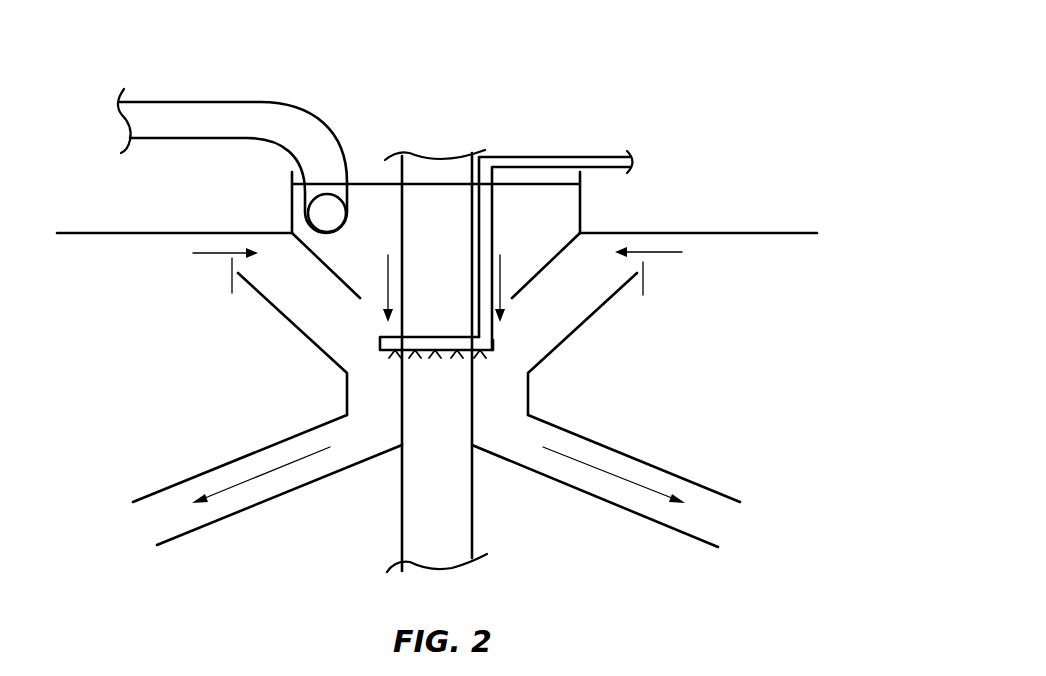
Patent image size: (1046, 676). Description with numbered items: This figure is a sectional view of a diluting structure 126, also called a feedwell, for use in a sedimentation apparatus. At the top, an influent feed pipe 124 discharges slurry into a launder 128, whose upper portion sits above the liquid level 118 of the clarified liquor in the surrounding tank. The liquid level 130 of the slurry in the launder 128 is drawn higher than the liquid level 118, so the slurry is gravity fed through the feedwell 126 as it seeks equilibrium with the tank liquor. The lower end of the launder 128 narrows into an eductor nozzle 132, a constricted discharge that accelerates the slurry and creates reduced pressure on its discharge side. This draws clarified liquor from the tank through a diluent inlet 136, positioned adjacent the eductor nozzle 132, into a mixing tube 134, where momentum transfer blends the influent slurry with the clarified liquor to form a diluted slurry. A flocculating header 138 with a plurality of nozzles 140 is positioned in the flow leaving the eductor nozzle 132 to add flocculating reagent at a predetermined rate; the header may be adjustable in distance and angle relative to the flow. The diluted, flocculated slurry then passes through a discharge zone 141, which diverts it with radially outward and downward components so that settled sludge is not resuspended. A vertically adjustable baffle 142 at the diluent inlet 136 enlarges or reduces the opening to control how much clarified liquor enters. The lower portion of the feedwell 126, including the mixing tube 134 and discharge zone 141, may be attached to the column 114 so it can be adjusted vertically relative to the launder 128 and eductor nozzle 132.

The column 114 is at (423, 150).
The liquid level 118 is at (737, 233).
The influent feed pipe 124 is at (222, 102).
The diluting structure 126 is at (653, 141).
The launder 128 is at (583, 212).
The liquid level 130 is at (360, 184).
The eductor nozzle 132 is at (513, 308).
The mixing tube 134 is at (528, 412).
The diluent inlet 136 is at (697, 257).
The flocculating header 138 is at (380, 341).
The nozzles 140 is at (390, 358).
The discharge zone 141 is at (748, 545).
The vertically adjustable baffle 142 is at (645, 280).